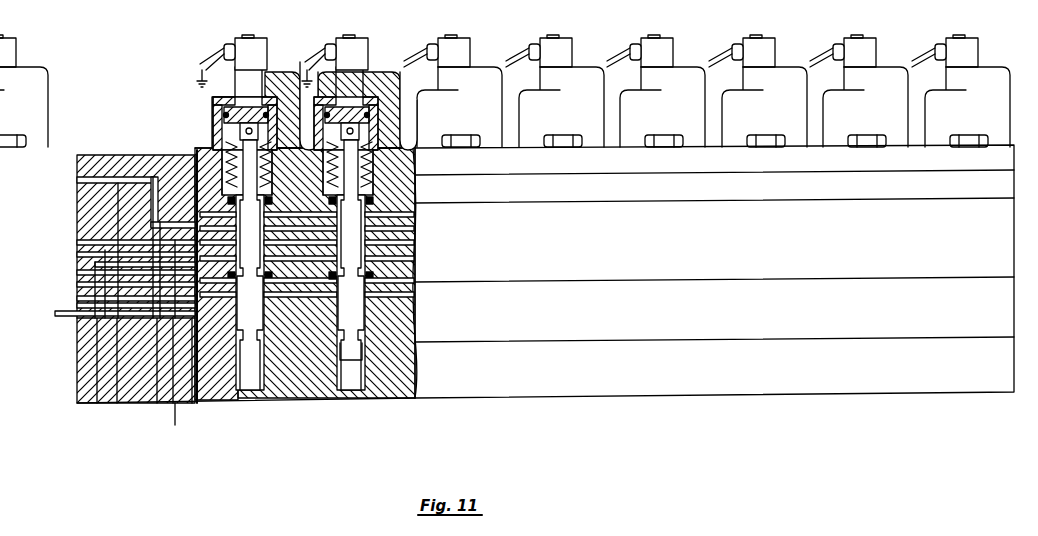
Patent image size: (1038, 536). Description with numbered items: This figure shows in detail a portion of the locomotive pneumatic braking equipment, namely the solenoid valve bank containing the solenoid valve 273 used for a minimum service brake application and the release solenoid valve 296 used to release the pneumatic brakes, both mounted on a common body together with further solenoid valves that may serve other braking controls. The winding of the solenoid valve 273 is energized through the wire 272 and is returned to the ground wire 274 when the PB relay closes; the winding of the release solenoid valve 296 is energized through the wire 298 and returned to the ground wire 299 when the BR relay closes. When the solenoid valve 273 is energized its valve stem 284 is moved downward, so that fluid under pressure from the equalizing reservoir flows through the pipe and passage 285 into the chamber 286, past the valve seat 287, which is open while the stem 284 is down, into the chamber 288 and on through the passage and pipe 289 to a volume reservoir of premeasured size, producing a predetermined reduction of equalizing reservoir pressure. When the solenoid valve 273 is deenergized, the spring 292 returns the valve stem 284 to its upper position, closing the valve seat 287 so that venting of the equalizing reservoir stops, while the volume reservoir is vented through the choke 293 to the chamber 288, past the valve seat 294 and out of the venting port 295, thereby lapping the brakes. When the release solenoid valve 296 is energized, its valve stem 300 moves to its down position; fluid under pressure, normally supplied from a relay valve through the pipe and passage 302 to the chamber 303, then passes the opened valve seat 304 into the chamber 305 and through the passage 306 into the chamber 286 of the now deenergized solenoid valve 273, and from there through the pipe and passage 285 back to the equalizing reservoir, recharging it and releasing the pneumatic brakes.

The wire 272 is at (222, 50).
The solenoid valve 273 is at (248, 40).
The ground wire 274 is at (207, 68).
The valve stem 284 is at (260, 365).
The pipe and passage 285 is at (60, 311).
The chamber 286 is at (246, 384).
The valve seat 287 is at (268, 320).
The chamber 288 is at (264, 216).
The passage and pipe 289 is at (173, 413).
The spring 292 is at (200, 74).
The choke 293 is at (82, 272).
The valve seat 294 is at (212, 143).
The venting port 295 is at (222, 140).
The release solenoid valve 296 is at (356, 42).
The wire 298 is at (306, 72).
The ground wire 299 is at (322, 55).
The valve stem 300 is at (413, 325).
The pipe and passage 302 is at (95, 387).
The chamber 303 is at (415, 236).
The valve seat 304 is at (412, 255).
The chamber 305 is at (413, 300).
The passage 306 is at (340, 358).